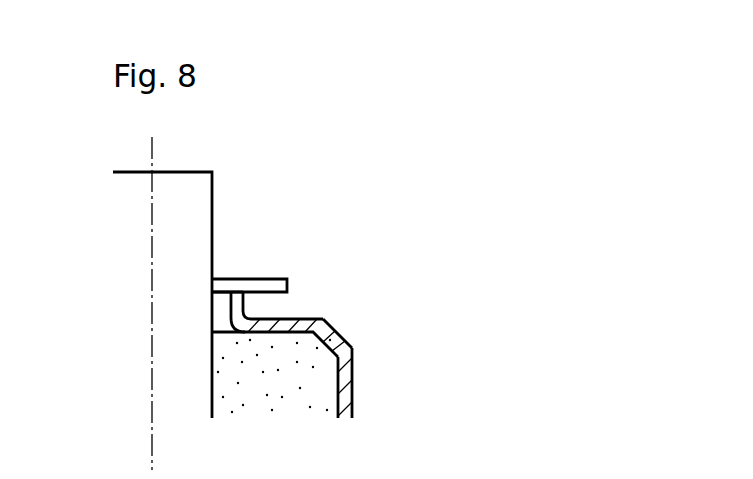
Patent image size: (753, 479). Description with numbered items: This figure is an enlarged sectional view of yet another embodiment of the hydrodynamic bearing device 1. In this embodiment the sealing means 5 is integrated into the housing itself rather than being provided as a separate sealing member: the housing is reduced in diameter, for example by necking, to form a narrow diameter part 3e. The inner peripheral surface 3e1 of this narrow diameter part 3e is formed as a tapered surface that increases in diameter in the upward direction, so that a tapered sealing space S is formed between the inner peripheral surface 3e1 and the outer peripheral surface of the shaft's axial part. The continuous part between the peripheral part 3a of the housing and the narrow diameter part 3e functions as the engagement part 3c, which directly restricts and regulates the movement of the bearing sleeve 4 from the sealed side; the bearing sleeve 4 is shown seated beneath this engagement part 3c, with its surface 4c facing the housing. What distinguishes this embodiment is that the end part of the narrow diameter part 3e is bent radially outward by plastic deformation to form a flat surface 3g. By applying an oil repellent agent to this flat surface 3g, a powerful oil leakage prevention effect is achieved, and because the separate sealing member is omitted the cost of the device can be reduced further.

The hydrodynamic bearing device 1 is at (399, 207).
The peripheral part 3a is at (345, 393).
The engagement part 3c is at (305, 318).
The narrow diameter part 3e is at (232, 306).
The inner peripheral surface 3e1 is at (236, 300).
The flat surface 3g is at (262, 291).
The bearing sleeve 4 is at (316, 376).
The upper surface of foam body 4c is at (278, 318).
The sealing means 5 is at (272, 233).
The sealing space S is at (218, 294).